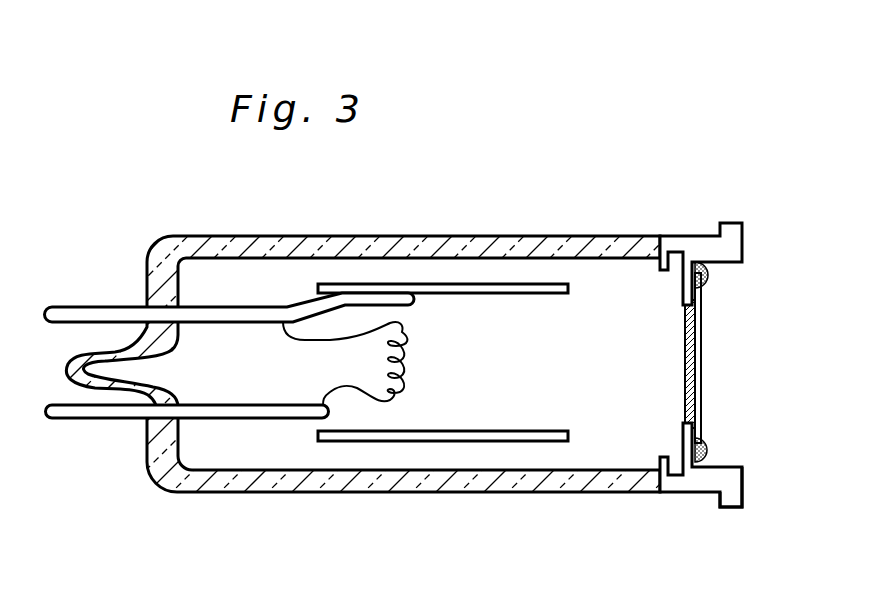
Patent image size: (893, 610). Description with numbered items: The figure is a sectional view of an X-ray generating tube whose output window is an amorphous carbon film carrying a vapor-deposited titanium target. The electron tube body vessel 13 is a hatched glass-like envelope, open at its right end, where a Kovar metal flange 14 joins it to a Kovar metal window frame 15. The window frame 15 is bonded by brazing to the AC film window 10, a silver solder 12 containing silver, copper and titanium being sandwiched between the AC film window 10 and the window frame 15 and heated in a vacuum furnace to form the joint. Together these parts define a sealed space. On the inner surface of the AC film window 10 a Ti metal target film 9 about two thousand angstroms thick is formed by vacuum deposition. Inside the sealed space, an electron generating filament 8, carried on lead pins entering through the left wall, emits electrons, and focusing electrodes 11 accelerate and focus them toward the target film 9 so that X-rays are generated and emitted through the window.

The electron generating filament 8 is at (402, 378).
The Ti metal target film 9 is at (685, 391).
The AC film window 10 is at (700, 373).
The focusing electrodes 11 is at (547, 296).
The silver solder 12 is at (708, 275).
The electron tube body vessel 13 is at (508, 493).
The flange 14 is at (683, 493).
The window frame 15 is at (743, 495).